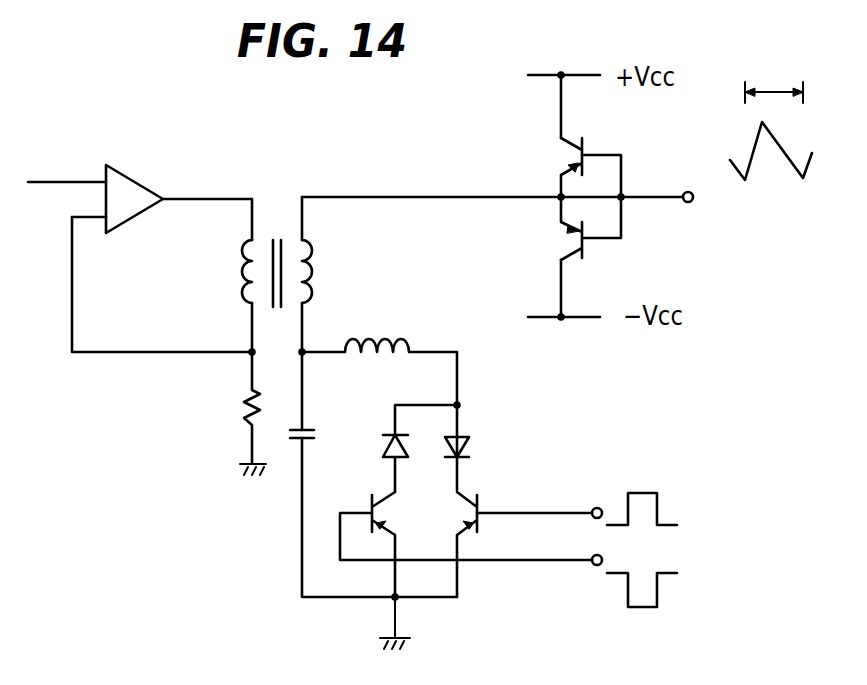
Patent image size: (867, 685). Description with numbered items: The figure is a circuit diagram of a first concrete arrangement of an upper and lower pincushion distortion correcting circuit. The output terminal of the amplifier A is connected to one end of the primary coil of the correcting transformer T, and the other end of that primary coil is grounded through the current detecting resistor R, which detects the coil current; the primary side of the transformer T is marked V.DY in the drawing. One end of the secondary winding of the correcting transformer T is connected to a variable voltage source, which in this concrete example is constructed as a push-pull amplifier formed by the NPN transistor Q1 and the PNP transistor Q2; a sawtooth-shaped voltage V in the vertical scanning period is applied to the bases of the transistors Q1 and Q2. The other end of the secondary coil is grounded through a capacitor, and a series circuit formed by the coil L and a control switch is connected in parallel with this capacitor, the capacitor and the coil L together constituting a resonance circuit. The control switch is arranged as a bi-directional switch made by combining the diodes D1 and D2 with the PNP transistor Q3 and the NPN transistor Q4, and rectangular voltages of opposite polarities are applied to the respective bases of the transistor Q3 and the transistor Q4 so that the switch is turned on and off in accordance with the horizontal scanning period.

The amplifier A is at (142, 183).
The correcting transformer T is at (259, 236).
The vertical deflection yoke (primary winding) V.DY is at (202, 271).
The current detecting resistor R is at (240, 413).
The coil L is at (379, 399).
The diode D1 is at (406, 448).
The diode D2 is at (476, 440).
The NPN transistor Q1 is at (555, 167).
The PNP transistor Q2 is at (552, 228).
The PNP transistor Q3 is at (467, 538).
The NPN transistor Q4 is at (529, 544).
The output voltage waveform V is at (771, 119).